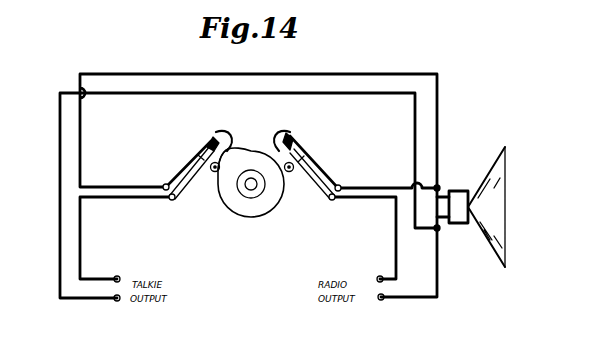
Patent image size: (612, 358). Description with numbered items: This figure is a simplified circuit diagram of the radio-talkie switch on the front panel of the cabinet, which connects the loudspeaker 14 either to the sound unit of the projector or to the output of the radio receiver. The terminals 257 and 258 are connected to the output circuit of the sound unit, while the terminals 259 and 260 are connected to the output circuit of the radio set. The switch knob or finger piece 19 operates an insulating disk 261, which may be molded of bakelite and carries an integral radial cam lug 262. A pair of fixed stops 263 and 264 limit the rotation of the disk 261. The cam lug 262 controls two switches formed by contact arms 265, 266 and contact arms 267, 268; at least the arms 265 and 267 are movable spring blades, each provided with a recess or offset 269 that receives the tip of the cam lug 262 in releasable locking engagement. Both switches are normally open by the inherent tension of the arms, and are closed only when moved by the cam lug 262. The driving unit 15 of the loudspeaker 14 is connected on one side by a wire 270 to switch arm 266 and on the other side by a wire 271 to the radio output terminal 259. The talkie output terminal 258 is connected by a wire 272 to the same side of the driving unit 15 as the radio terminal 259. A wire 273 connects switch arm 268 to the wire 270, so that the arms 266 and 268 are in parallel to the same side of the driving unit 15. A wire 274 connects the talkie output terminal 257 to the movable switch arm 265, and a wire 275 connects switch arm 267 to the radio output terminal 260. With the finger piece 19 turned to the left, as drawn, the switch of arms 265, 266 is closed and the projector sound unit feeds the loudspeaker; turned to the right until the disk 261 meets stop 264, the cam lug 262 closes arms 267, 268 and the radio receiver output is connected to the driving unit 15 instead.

The loudspeaker 14 is at (500, 195).
The driving unit 15 is at (458, 191).
The finger piece 19 is at (251, 184).
The talkie output terminal 257 is at (128, 262).
The talkie output terminal 258 is at (115, 301).
The radio output terminal 259 is at (381, 300).
The radio output terminal 260 is at (380, 276).
The insulating disk 261 is at (253, 218).
The cam lug 262 is at (238, 148).
The fixed stop 263 is at (214, 172).
The fixed stop 264 is at (305, 160).
The contact arm 265 is at (200, 158).
The contact arm 266 is at (209, 143).
The contact arm 267 is at (291, 172).
The contact arm 268 is at (296, 138).
The recess 269 is at (218, 133).
The wire 270 is at (437, 76).
The wire 271 is at (437, 292).
The wire 272 is at (415, 117).
The wire 273 is at (362, 188).
The wire 274 is at (80, 230).
The wire 275 is at (396, 228).